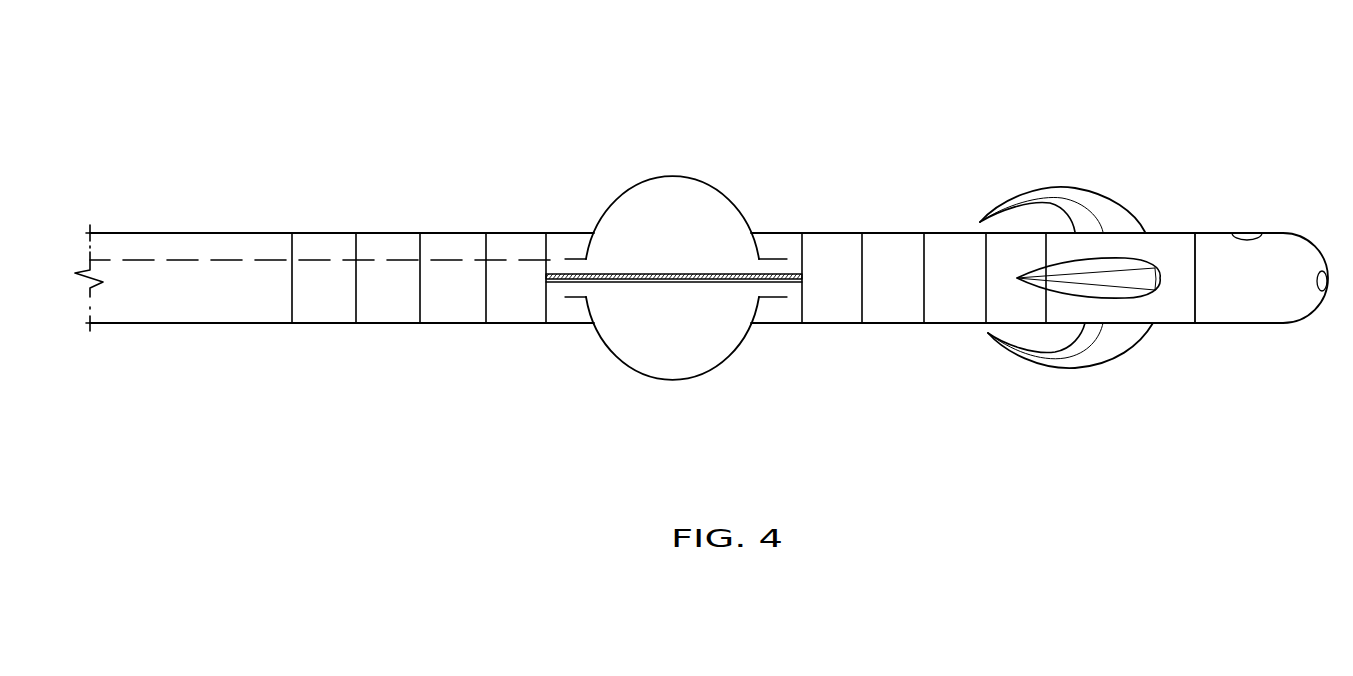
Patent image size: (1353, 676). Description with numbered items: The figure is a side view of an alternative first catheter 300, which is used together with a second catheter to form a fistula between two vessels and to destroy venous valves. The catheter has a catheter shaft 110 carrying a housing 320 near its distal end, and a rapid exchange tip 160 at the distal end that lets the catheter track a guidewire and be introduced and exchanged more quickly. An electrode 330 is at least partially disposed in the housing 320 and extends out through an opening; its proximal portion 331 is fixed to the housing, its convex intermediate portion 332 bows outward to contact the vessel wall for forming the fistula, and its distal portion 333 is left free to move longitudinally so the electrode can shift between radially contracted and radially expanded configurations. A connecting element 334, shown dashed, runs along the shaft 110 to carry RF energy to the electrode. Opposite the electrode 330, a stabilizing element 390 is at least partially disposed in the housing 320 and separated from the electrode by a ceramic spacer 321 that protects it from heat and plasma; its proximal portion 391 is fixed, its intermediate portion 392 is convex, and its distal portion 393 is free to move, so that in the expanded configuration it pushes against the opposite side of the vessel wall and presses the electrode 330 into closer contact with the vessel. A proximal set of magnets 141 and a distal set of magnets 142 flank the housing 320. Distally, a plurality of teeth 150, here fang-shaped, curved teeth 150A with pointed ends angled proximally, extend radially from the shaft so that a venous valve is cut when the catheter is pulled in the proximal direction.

The first catheter 300 is at (255, 185).
The catheter shaft 110 is at (190, 243).
The lumen 334 is at (400, 256).
The proximal set of magnets 141 is at (385, 323).
The distal set of magnets 142 is at (890, 323).
The housing 320 is at (558, 323).
The ceramic spacer 321 is at (678, 282).
The electrode 330 is at (644, 262).
The proximal upper neck 331 is at (573, 258).
The upper balloon wall 332 is at (626, 193).
The distal upper neck 333 is at (768, 257).
The stabilizing element 390 is at (637, 382).
The proximal portion 391 is at (570, 298).
The intermediate portion 392 is at (673, 380).
The distal portion 393 is at (767, 298).
The plurality of teeth 150 is at (1070, 250).
The teeth 150A is at (1085, 367).
The rapid exchange tip 160 is at (1247, 232).